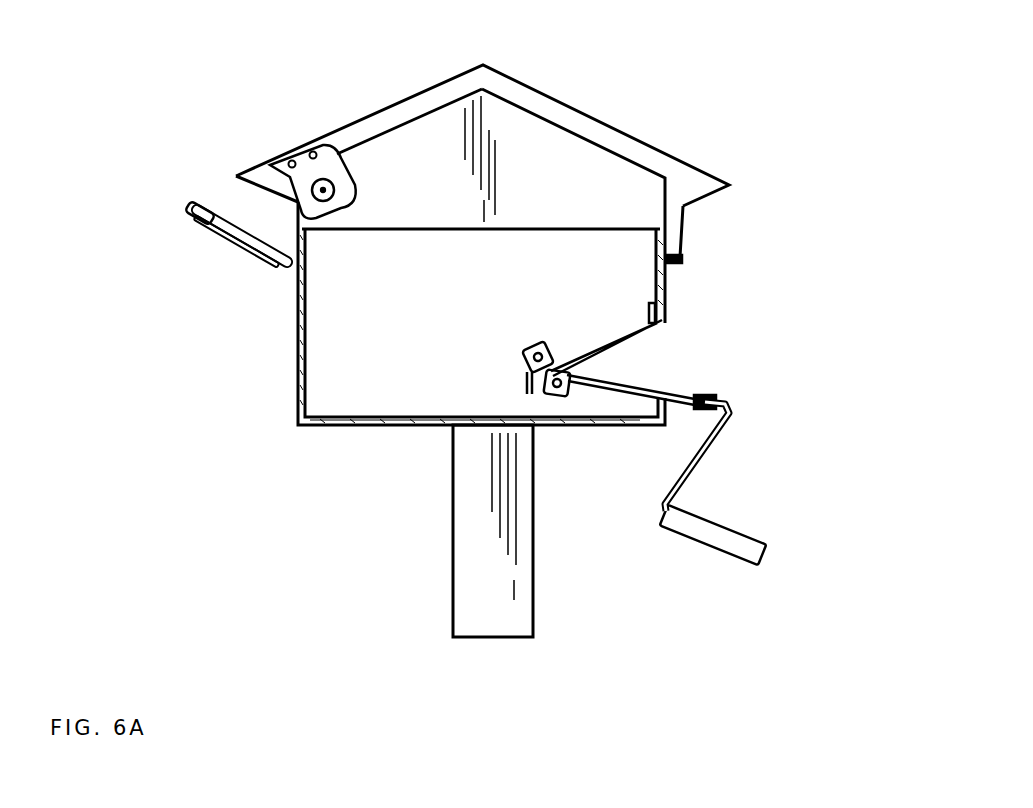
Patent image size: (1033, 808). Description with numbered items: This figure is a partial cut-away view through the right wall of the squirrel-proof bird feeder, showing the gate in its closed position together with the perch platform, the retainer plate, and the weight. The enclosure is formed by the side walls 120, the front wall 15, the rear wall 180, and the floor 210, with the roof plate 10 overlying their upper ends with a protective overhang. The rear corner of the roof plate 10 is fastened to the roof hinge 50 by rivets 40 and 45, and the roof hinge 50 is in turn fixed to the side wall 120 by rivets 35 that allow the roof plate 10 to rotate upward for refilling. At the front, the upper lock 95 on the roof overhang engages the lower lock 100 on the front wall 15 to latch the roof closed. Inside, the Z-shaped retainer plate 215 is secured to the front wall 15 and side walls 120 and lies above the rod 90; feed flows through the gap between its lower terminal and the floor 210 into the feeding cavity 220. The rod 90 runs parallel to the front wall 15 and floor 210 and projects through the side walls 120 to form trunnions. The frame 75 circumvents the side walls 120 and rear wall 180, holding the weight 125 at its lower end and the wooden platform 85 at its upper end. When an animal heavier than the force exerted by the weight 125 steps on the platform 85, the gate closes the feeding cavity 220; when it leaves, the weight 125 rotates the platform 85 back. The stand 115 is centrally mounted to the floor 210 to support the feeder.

The roof plate 10 is at (445, 72).
The front wall 15 is at (652, 302).
The rivets 35 is at (330, 190).
The rivet 40 is at (313, 150).
The rivet 45 is at (290, 160).
The roof hinge 50 is at (340, 202).
The frame 75 is at (695, 462).
The platform 85 is at (712, 400).
The rod 90 is at (560, 396).
The upper lock 95 is at (678, 220).
The lower lock 100 is at (690, 258).
The stand 115 is at (500, 570).
The side walls 120 is at (555, 155).
The weight 125 is at (200, 216).
The rear wall 180 is at (300, 372).
The floor 210 is at (376, 424).
The retainer plate 215 is at (538, 350).
The feeding cavity 220 is at (662, 354).